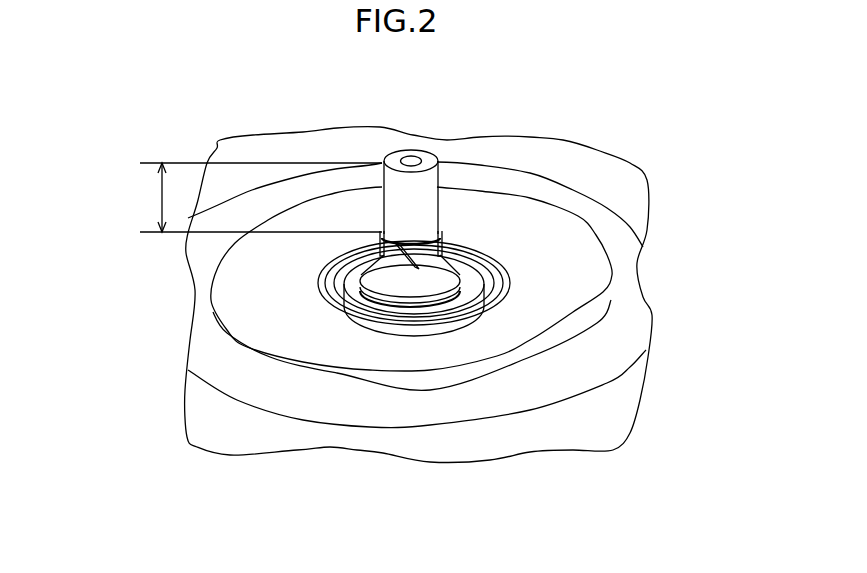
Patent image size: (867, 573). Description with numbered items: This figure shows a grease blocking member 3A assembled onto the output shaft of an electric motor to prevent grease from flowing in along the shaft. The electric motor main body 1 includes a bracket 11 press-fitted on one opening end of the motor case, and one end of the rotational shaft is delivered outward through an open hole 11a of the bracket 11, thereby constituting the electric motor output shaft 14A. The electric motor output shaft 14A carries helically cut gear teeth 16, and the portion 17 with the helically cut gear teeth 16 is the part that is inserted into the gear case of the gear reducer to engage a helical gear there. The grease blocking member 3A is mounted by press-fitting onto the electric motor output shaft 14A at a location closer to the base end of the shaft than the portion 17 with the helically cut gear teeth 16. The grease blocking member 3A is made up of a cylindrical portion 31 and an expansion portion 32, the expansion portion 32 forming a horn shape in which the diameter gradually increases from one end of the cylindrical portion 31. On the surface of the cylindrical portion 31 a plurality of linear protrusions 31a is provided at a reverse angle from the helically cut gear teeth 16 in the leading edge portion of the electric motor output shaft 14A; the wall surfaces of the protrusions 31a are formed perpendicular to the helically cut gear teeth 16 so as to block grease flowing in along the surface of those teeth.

The electric motor main body 1 is at (603, 360).
The bracket 11 is at (557, 290).
The open hole 11a is at (330, 266).
The electric motor output shaft 14A is at (438, 203).
The helically cut gear teeth 16 is at (428, 158).
The portion with the helically cut gear teeth 17 is at (160, 200).
The grease blocking member 3A is at (470, 274).
The cylindrical portion 31 is at (442, 242).
The linear protrusions 31a is at (393, 262).
The expansion portion 32 is at (417, 288).